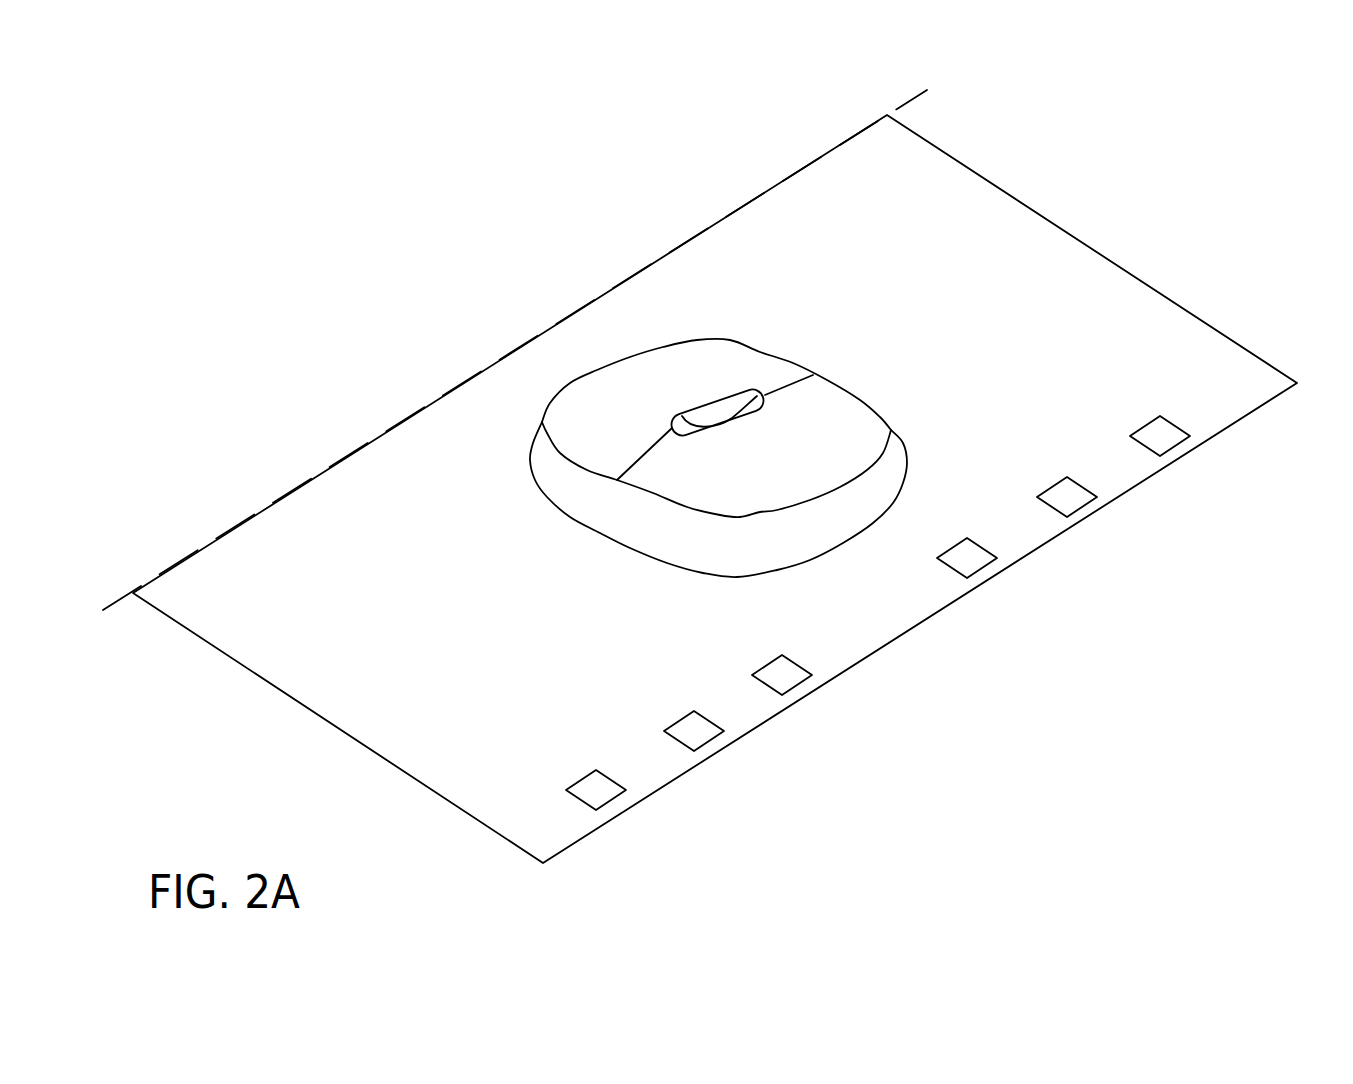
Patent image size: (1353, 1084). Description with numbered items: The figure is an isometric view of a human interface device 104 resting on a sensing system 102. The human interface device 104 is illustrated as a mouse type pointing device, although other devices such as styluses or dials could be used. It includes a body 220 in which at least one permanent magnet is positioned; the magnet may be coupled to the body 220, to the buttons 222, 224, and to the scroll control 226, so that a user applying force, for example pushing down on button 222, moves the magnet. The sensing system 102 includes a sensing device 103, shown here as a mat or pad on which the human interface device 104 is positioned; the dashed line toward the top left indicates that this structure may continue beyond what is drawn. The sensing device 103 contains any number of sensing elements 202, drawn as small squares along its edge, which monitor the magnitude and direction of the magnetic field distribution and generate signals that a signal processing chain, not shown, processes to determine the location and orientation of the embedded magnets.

The sensing system 102 is at (700, 476).
The sensing device 103 is at (1222, 362).
The human interface device 104 is at (560, 376).
The sensing element 202 is at (780, 679).
The body 220 is at (647, 527).
The button 222 is at (627, 405).
The button 224 is at (822, 418).
The scroll control 226 is at (664, 292).